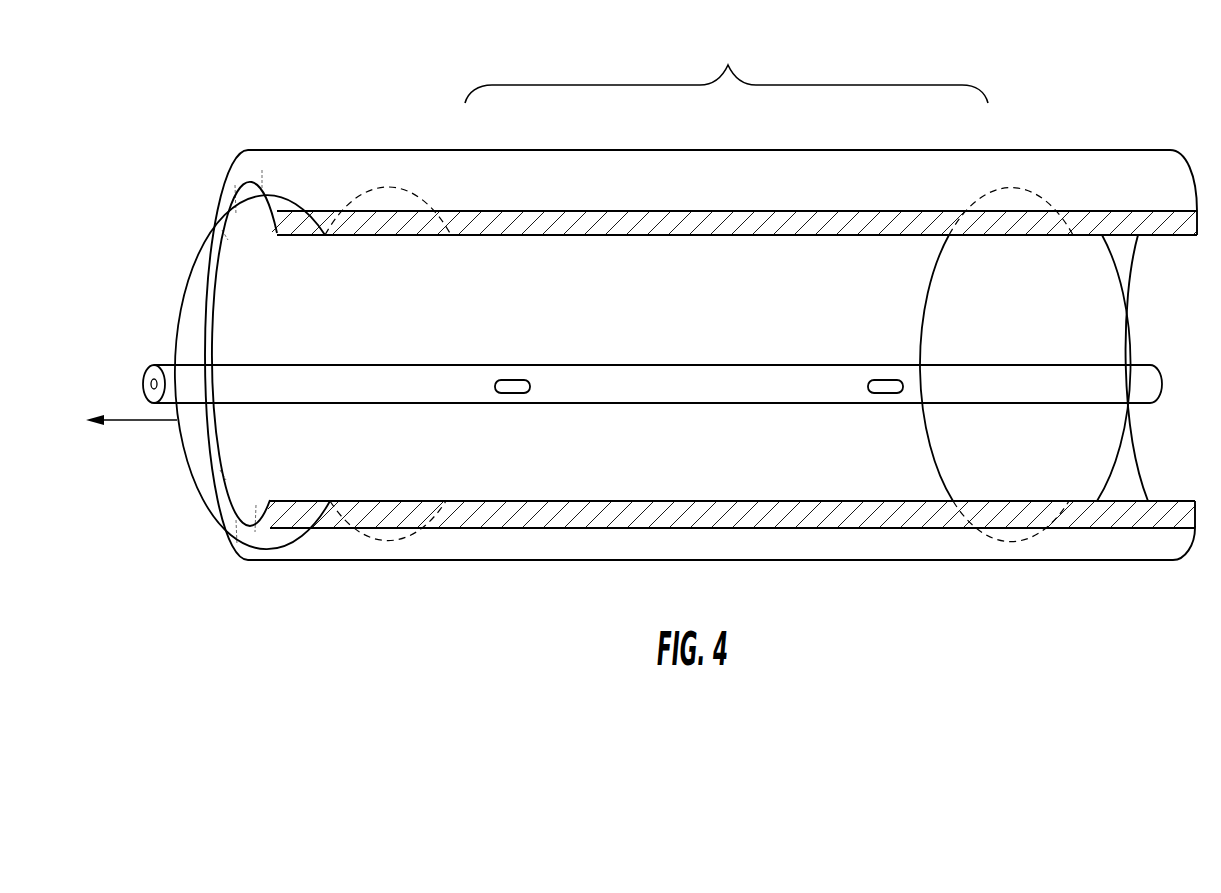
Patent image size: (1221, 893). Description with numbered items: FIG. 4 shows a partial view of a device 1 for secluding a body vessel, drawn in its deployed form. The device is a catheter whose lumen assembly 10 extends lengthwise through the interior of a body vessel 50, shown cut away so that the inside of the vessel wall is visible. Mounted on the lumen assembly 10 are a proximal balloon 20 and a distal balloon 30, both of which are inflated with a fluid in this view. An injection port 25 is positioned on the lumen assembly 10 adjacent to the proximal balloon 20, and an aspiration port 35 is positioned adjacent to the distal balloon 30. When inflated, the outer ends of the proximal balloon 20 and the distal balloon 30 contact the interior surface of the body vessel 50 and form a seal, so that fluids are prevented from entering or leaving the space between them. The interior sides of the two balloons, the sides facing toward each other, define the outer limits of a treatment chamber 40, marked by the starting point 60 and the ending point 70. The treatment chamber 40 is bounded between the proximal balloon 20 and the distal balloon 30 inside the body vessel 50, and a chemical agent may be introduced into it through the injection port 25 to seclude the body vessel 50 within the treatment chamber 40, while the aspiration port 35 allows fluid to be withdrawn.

The device assembly 1 is at (243, 364).
The lumen assembly 10 is at (168, 365).
The proximal balloon 20 is at (463, 468).
The injection port 25 is at (512, 380).
The distal balloon 30 is at (936, 470).
The aspiration port 35 is at (885, 380).
The treatment chamber 40 is at (726, 64).
The body vessel 50 is at (1157, 150).
The starting point 60 is at (1057, 152).
The ending point 70 is at (353, 152).